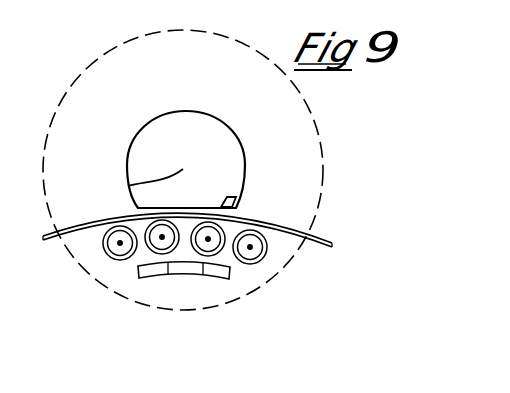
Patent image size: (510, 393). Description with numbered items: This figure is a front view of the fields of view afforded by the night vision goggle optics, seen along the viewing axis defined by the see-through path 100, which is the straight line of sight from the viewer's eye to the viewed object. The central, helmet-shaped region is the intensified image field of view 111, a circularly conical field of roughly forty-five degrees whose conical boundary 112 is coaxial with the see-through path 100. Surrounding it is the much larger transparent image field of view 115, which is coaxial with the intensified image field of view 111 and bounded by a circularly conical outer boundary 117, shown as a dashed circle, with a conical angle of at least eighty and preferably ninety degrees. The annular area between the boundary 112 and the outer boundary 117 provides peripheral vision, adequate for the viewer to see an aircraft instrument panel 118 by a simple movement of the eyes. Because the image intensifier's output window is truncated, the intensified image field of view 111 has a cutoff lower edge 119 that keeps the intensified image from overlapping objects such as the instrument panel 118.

The see-through path 100 is at (129, 186).
The intensified image field of view 111 is at (224, 152).
The conical boundary 112 is at (213, 112).
The transparent image field of view 115 is at (95, 106).
The circularly conical outer boundary 117 is at (313, 108).
The instrument panel 118 is at (148, 279).
The cutoff lower edge 119 is at (236, 197).